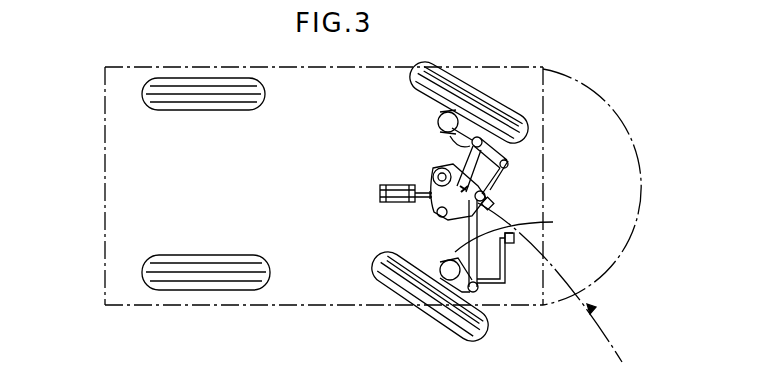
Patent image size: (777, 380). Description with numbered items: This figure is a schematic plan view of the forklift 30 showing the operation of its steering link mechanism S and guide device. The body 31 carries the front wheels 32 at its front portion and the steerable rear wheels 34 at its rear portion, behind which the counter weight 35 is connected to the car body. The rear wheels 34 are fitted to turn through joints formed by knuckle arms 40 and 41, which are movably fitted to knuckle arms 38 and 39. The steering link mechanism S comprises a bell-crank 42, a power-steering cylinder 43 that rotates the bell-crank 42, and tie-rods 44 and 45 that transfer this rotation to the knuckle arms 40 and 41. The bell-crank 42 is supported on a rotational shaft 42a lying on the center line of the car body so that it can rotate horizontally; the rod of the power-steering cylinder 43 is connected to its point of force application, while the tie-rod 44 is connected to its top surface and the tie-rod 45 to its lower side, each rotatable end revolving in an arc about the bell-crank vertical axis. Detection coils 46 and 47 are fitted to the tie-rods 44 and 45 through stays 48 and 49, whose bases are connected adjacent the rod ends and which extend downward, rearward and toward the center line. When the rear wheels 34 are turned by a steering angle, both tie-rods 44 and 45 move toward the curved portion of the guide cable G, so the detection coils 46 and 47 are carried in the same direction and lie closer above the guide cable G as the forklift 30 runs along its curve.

The forklift 30 is at (555, 54).
The body 31 is at (270, 75).
The front wheels 32 is at (203, 85).
The rear wheels 34 is at (460, 84).
The counter weight 35 is at (620, 140).
The knuckle arm 38 is at (443, 262).
The knuckle arm 39 is at (438, 114).
The knuckle arm 40 is at (468, 262).
The knuckle arm 41 is at (470, 144).
The bell-crank 42 is at (434, 212).
The rotational shaft 42a is at (432, 175).
The power-steering cylinder 43 is at (378, 193).
The tie-rod 44 is at (550, 222).
The tie-rod 45 is at (455, 168).
The detection coil 46 is at (518, 238).
The detection coil 47 is at (492, 202).
The stay 48 is at (500, 287).
The stay 49 is at (508, 165).
The steering link mechanism S is at (508, 155).
The guide cable G is at (604, 326).